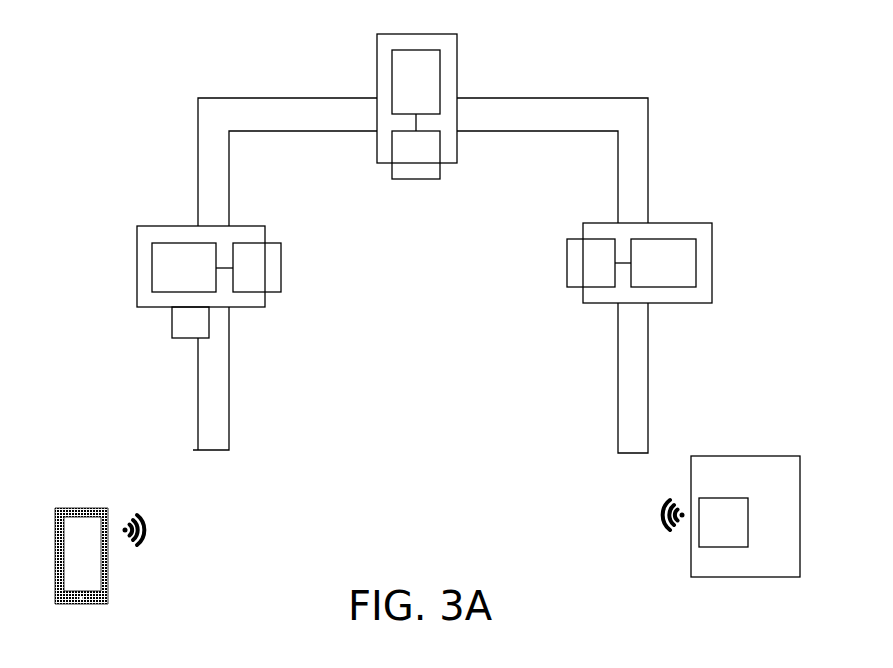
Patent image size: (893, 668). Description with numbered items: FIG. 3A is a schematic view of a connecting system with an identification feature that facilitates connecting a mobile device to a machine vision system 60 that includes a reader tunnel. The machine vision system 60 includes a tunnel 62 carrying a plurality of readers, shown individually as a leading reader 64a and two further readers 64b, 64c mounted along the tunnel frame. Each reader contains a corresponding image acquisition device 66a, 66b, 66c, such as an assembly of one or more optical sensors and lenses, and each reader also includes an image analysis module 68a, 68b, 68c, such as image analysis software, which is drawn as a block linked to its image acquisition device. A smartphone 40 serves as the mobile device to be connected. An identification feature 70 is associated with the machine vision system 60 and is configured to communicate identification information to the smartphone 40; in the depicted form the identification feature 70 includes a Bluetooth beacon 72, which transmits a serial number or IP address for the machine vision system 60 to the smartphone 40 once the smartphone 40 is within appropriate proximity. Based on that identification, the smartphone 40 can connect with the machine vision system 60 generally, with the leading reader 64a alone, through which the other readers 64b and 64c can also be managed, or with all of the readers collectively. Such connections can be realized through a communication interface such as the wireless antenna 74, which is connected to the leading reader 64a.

The smartphone 40 is at (108, 517).
The machine vision system 60 is at (666, 88).
The tunnel 62 is at (197, 162).
The leading reader 64a is at (151, 226).
The reader 64b is at (455, 141).
The reader 64c is at (687, 222).
The image acquisition device 66a is at (252, 292).
The image acquisition device 66b is at (430, 180).
The image acquisition device 66c is at (567, 268).
The image analysis module 68a is at (167, 292).
The image analysis module 68b is at (392, 91).
The image analysis module 68c is at (676, 287).
The identification feature 70 is at (757, 577).
The Bluetooth beacon 72 is at (697, 537).
The wireless antenna 74 is at (188, 338).